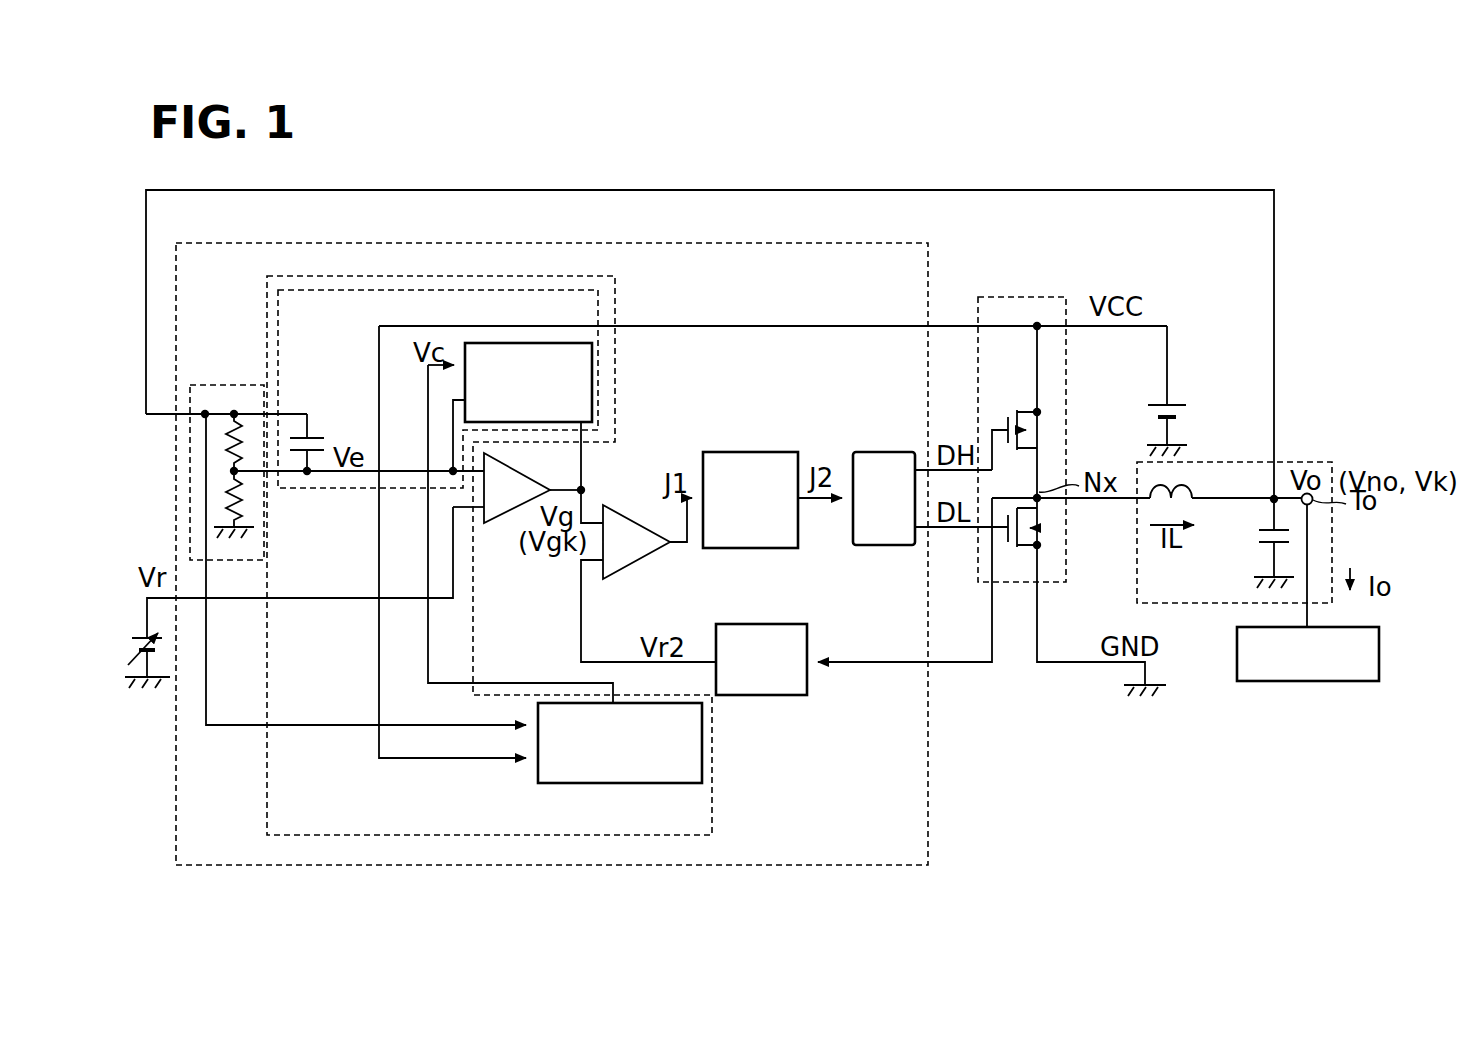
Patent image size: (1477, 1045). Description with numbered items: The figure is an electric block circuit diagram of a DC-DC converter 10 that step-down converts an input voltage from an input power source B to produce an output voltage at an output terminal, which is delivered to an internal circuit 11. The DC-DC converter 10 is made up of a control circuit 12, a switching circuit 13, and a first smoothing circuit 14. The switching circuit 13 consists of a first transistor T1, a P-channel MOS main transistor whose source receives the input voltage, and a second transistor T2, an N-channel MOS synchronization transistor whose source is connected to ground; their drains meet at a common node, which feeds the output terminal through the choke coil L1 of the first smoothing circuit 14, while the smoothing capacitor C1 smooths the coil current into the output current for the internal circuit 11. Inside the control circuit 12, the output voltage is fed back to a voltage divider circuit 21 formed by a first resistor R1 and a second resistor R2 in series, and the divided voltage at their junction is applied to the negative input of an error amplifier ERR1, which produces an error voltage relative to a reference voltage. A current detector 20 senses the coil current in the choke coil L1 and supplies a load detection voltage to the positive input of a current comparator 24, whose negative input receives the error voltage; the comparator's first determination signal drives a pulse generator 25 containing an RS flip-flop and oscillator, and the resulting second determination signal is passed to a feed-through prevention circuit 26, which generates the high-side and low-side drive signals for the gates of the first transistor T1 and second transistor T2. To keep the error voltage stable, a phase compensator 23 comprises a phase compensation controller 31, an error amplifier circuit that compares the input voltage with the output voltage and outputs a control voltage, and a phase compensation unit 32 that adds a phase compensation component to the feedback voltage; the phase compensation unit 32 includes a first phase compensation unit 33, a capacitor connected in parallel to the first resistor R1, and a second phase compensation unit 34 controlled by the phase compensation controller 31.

The DC-DC converter 10 is at (881, 150).
The internal circuit 11 is at (1306, 682).
The control circuit 12 is at (649, 246).
The switching circuit 13 is at (1025, 297).
The first smoothing circuit 14 is at (1225, 462).
The current detector 20 is at (763, 624).
The voltage divider circuit 21 is at (225, 385).
The phase compensator 23 is at (617, 285).
The current comparator 24 is at (637, 519).
The pulse generator 25 is at (757, 452).
The feed-through prevention circuit 26 is at (883, 452).
The phase compensation controller 31 is at (613, 784).
The phase compensation unit 32 is at (600, 341).
The first phase compensation unit 33 is at (313, 438).
The second phase compensation unit 34 is at (593, 374).
The first resistor R1 is at (230, 428).
The second resistor R2 is at (247, 514).
The first transistor T1 is at (1028, 443).
The second transistor T2 is at (1026, 515).
The input power source B is at (1170, 405).
The choke coil L1 is at (1184, 488).
The smoothing capacitor C1 is at (1287, 548).
The error amplifier ERR1 is at (508, 518).